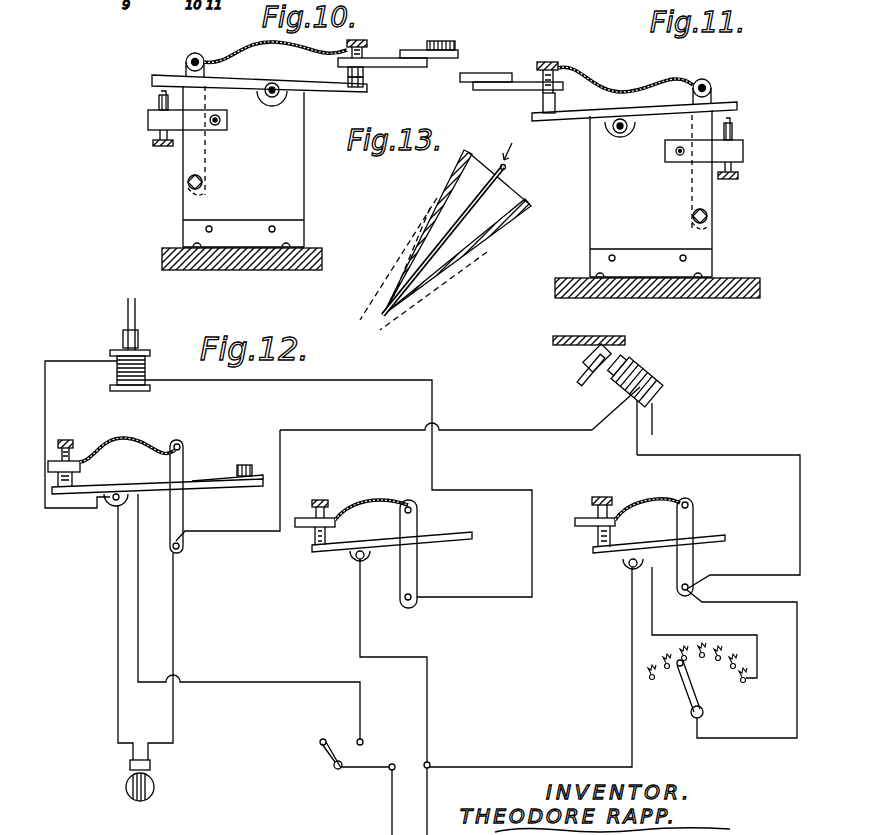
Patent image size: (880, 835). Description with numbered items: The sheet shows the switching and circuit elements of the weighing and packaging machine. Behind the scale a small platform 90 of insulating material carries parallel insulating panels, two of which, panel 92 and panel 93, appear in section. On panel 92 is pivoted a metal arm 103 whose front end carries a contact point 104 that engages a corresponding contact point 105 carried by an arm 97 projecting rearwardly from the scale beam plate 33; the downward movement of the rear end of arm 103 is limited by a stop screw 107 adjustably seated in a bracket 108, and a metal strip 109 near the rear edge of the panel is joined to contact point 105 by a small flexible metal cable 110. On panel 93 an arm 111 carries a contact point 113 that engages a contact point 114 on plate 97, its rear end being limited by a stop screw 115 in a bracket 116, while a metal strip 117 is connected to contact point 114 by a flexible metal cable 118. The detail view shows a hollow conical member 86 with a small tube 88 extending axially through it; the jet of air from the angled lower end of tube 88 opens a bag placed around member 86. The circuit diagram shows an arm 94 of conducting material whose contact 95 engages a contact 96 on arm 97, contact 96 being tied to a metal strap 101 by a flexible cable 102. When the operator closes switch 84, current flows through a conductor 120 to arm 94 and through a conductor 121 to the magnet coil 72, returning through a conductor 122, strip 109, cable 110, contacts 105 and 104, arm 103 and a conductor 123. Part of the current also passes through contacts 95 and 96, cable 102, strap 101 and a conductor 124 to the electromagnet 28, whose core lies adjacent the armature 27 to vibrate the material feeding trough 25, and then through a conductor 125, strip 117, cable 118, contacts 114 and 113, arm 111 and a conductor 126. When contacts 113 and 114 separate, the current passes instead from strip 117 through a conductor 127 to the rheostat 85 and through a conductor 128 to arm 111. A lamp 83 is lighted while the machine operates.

In FIG. 12, the material feeding trough 25 is at (570, 327).
In FIG. 12, the armature 27 is at (584, 368).
In FIG. 12, the electromagnet 28 is at (650, 367).
In FIG. 10, the plate 33 is at (455, 50).
In FIG. 11, the plate 33 is at (483, 80).
In FIG. 12, the magnet coil 72 is at (148, 362).
In FIG. 12, the lamp 83 is at (126, 787).
In FIG. 12, the electric switch 84 is at (318, 763).
In FIG. 12, the rheostat 85 is at (697, 680).
In FIG. 13, the hollow conical member 86 is at (452, 180).
In FIG. 13, the tube 88 is at (506, 170).
In FIG. 10, the platform 90 is at (165, 258).
In FIG. 11, the platform 90 is at (742, 283).
In FIG. 10, the panel 92 is at (183, 212).
In FIG. 11, the panel 93 is at (596, 237).
In FIG. 12, the arm 94 is at (206, 480).
In FIG. 12, the contact 95 is at (72, 496).
In FIG. 12, the contact 96 is at (80, 469).
In FIG. 10, the arm 97 is at (378, 57).
In FIG. 11, the arm 97 is at (490, 94).
In FIG. 12, the metal strap 101 is at (180, 440).
In FIG. 12, the flexible cable 102 is at (130, 428).
In FIG. 10, the metal arm 103 is at (322, 90).
In FIG. 12, the metal arm 103 is at (388, 545).
In FIG. 10, the contact point 104 is at (366, 84).
In FIG. 12, the contact point 104 is at (318, 547).
In FIG. 10, the contact point 105 is at (364, 72).
In FIG. 12, the contact point 105 is at (312, 540).
In FIG. 10, the stop screw 107 is at (175, 145).
In FIG. 10, the bracket 108 is at (148, 125).
In FIG. 10, the metal strip 109 is at (186, 66).
In FIG. 12, the metal strip 109 is at (417, 568).
In FIG. 10, the flexible metal cable 110 is at (258, 45).
In FIG. 12, the flexible metal cable 110 is at (367, 505).
In FIG. 11, the arm 111 is at (572, 122).
In FIG. 12, the arm 111 is at (662, 536).
In FIG. 11, the contact point 113 is at (543, 108).
In FIG. 12, the contact point 113 is at (600, 549).
In FIG. 11, the contact point 114 is at (540, 95).
In FIG. 12, the contact point 114 is at (598, 530).
In FIG. 11, the stop screw 115 is at (738, 176).
In FIG. 11, the bracket 116 is at (666, 152).
In FIG. 11, the metal strip 117 is at (706, 80).
In FIG. 12, the metal strip 117 is at (695, 517).
In FIG. 11, the flexible metal cable 118 is at (596, 82).
In FIG. 12, the flexible metal cable 118 is at (650, 495).
In FIG. 12, the conductor 120 is at (258, 675).
In FIG. 12, the conductor 121 is at (95, 366).
In FIG. 12, the conductor 122 is at (392, 377).
In FIG. 12, the conductor 123 is at (428, 687).
In FIG. 12, the conductor 124 is at (510, 428).
In FIG. 12, the conductor 125 is at (742, 452).
In FIG. 12, the conductor 126 is at (630, 748).
In FIG. 12, the conductor 127 is at (797, 703).
In FIG. 12, the conductor 128 is at (745, 636).